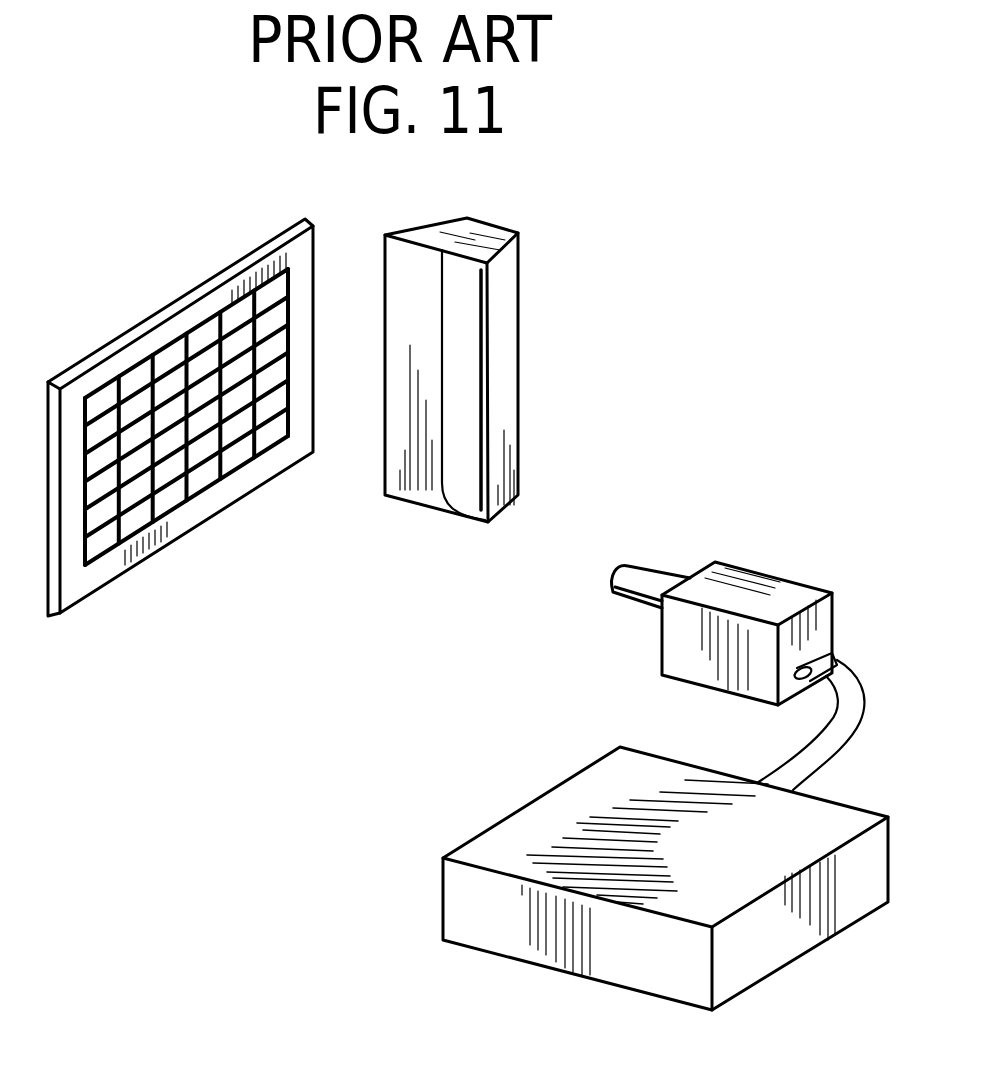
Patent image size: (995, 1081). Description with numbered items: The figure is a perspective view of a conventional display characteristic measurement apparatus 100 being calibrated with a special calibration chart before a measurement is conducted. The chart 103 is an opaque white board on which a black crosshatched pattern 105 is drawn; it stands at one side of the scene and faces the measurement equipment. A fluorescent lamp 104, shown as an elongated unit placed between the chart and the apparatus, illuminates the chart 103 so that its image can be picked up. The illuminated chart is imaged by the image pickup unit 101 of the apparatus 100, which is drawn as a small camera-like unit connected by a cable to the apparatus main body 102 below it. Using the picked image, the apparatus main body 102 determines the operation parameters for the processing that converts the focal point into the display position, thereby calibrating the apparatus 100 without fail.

The display characteristic measurement apparatus 100 is at (610, 676).
The image pickup unit 101 is at (742, 578).
The apparatus main body 102 is at (500, 818).
The chart 103 is at (105, 590).
The fluorescent lamp 104 is at (513, 337).
The black crosshatched pattern 105 is at (163, 347).